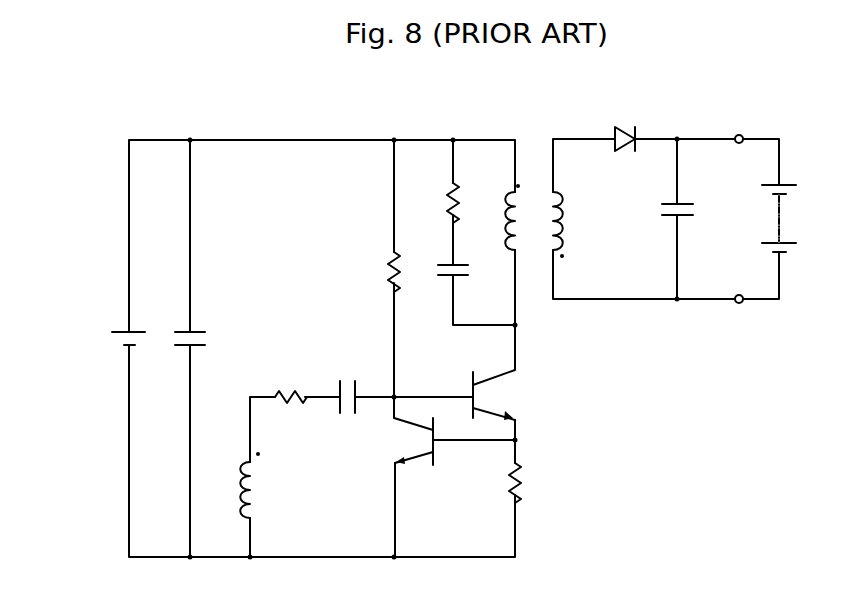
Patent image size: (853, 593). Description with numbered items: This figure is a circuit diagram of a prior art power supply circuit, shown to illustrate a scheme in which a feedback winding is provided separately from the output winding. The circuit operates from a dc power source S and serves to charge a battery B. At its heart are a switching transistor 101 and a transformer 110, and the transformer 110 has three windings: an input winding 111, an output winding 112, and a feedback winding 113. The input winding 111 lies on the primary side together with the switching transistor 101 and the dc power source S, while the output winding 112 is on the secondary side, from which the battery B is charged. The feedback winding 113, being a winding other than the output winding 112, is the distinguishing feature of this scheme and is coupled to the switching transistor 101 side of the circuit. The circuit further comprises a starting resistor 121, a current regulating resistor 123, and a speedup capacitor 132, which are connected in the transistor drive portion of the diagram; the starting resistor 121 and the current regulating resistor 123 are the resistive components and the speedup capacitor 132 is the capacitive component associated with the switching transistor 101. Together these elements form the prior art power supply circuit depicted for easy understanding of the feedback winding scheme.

The dc power source S is at (122, 337).
The battery B is at (783, 214).
The transformer 110 is at (542, 172).
The input winding 111 is at (507, 215).
The output winding 112 is at (562, 221).
The starting resistor 121 is at (388, 267).
The speedup capacitor 132 is at (348, 385).
The current regulating resistor 123 is at (290, 403).
The feedback winding 113 is at (258, 490).
The switching transistor 101 is at (503, 393).